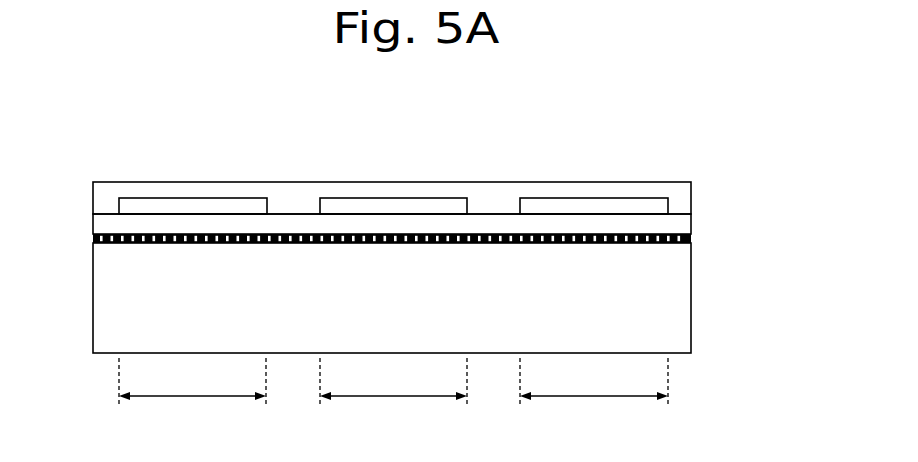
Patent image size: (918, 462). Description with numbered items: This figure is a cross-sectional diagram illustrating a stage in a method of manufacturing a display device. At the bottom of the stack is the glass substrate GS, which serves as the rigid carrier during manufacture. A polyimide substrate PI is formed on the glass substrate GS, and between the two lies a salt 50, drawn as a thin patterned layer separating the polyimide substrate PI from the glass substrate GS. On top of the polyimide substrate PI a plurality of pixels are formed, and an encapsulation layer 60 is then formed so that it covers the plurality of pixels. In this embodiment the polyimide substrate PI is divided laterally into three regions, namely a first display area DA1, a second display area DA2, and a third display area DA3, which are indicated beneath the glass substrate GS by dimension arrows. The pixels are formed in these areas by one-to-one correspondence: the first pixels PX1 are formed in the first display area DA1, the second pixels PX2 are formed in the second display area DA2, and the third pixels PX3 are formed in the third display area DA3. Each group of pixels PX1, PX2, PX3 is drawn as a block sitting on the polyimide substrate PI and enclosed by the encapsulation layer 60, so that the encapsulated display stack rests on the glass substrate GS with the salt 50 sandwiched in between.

The encapsulation layer 60 is at (688, 194).
The polyimide substrate PI is at (688, 222).
The salt 50 is at (691, 238).
The glass substrate GS is at (685, 300).
The first pixels PX1 is at (213, 207).
The second pixels PX2 is at (412, 207).
The third pixels PX3 is at (613, 207).
The first display area DA1 is at (192, 391).
The second display area DA2 is at (393, 391).
The third display area DA3 is at (594, 391).